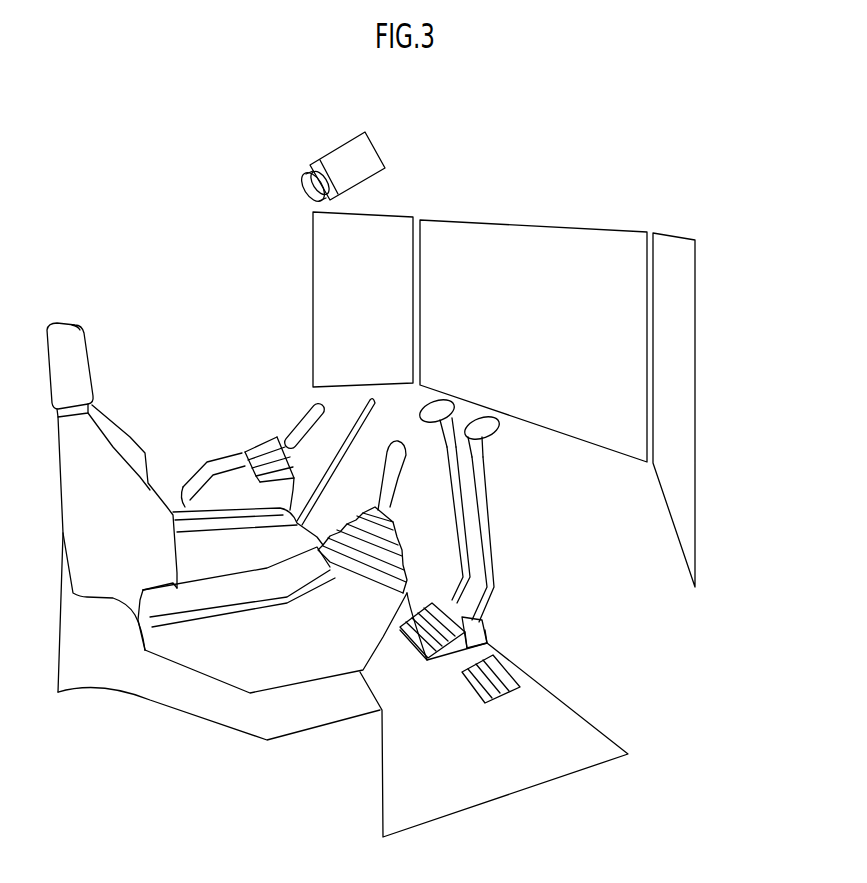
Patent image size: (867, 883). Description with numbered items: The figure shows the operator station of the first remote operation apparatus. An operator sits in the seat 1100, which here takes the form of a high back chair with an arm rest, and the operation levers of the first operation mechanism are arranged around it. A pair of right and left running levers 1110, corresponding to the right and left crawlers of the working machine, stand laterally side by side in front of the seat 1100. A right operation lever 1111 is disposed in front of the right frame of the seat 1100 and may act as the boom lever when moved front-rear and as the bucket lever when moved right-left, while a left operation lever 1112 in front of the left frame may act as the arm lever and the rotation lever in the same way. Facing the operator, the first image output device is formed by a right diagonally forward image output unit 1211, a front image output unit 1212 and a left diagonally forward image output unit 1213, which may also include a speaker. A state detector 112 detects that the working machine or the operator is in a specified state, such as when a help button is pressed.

The state detector 112 is at (347, 137).
The seat 1100 is at (142, 303).
The running levers 1110 is at (494, 504).
The right operation lever 1111 is at (403, 468).
The left operation lever 1112 is at (303, 407).
The right diagonally forward image output unit 1211 is at (684, 238).
The front image output unit 1212 is at (534, 226).
The left diagonally forward image output unit 1213 is at (385, 212).